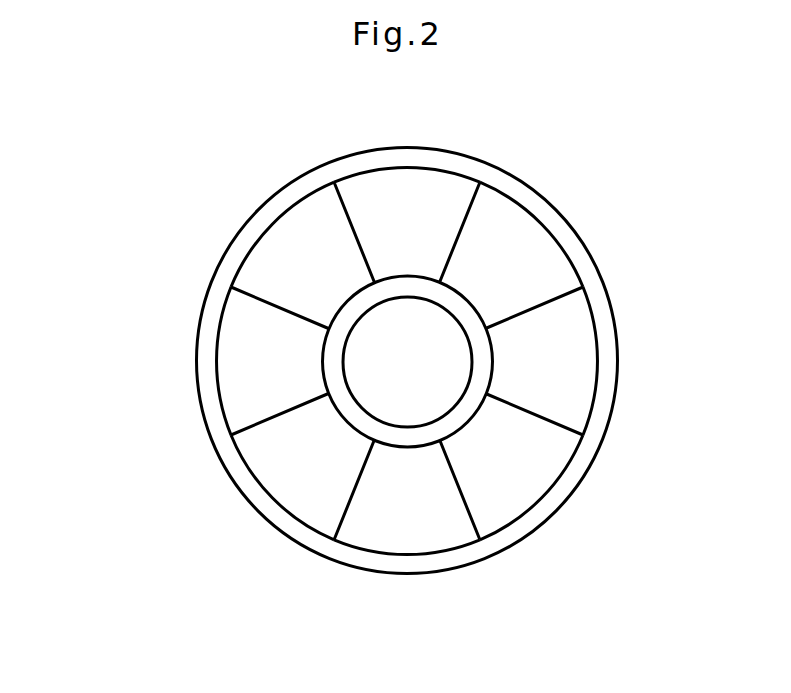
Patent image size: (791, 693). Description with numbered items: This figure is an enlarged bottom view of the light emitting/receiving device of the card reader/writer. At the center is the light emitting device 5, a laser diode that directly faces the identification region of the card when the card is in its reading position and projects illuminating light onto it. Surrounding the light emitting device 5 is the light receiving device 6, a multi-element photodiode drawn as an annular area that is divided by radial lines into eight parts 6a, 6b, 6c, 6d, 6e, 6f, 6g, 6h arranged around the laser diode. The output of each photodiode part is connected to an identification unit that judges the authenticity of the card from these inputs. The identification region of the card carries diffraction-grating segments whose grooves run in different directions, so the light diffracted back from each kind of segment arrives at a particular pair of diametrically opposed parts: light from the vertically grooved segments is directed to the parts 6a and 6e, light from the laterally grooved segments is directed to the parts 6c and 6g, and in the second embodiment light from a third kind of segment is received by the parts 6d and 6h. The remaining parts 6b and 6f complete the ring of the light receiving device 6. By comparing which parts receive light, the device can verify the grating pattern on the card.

The light emitting device 5 is at (437, 343).
The light receiving device 6 is at (198, 285).
The part of light receiving device 6a is at (380, 187).
The part of light receiving device 6b is at (502, 218).
The part of light receiving device 6c is at (575, 345).
The part of light receiving device 6d is at (543, 472).
The part of light receiving device 6e is at (432, 538).
The part of light receiving device 6f is at (307, 497).
The part of light receiving device 6g is at (232, 360).
The part of light receiving device 6h is at (293, 238).